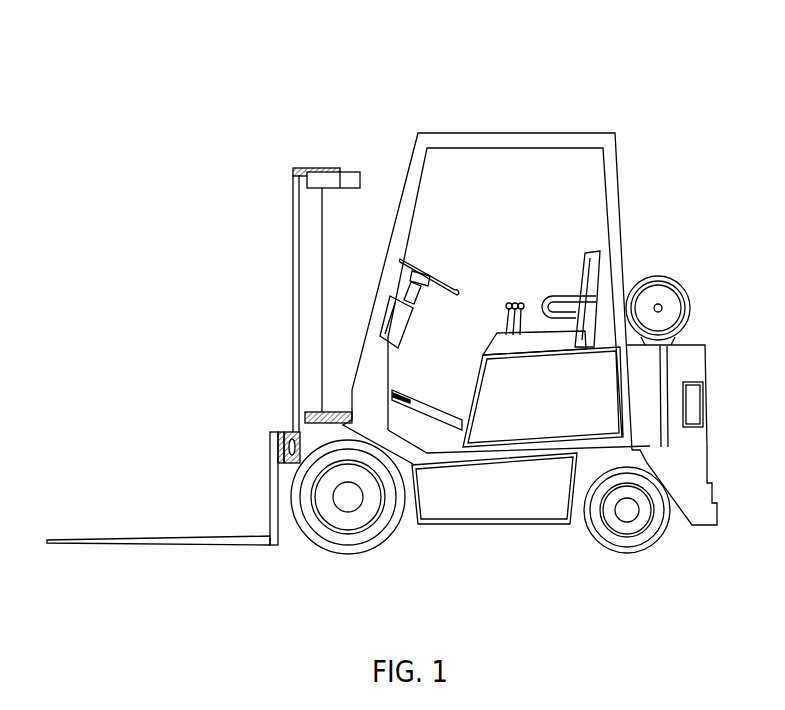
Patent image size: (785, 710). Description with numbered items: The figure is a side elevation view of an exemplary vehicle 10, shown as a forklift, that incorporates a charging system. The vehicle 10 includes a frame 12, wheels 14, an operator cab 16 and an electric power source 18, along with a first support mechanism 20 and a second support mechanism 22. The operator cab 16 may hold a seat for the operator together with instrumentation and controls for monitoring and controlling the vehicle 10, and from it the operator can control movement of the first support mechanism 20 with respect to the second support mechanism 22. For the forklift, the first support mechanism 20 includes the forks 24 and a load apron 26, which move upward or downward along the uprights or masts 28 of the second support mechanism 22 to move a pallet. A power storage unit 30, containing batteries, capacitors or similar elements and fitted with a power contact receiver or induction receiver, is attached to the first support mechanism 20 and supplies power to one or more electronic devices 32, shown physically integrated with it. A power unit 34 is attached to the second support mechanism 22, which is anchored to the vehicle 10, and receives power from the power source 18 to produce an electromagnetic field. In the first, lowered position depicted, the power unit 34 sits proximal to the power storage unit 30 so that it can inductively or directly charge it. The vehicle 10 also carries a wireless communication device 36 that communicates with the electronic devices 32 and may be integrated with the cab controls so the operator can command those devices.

The vehicle 10 is at (630, 65).
The frame 12 is at (480, 527).
The wheels 14 is at (353, 553).
The operator cab 16 is at (582, 195).
The electric power source 18 is at (705, 348).
The first support mechanism 20 is at (167, 491).
The second support mechanism 22 is at (268, 315).
The forks 24 is at (160, 548).
The load apron 26 is at (270, 527).
The masts 28 is at (293, 274).
The power storage unit 30 is at (290, 432).
The electronic device 32 is at (287, 432).
The power unit 34 is at (308, 412).
The wireless communication device 36 is at (405, 345).